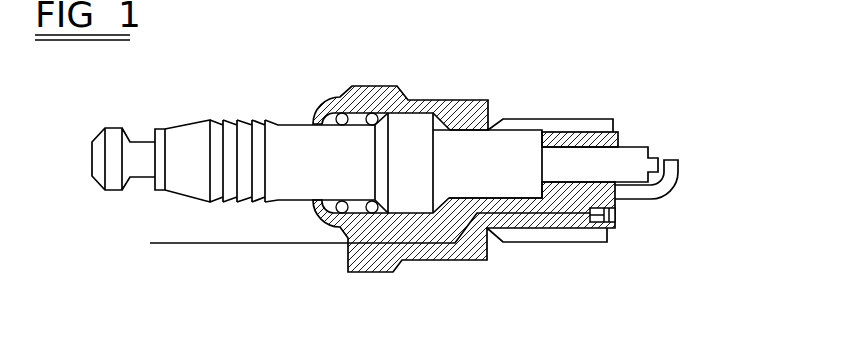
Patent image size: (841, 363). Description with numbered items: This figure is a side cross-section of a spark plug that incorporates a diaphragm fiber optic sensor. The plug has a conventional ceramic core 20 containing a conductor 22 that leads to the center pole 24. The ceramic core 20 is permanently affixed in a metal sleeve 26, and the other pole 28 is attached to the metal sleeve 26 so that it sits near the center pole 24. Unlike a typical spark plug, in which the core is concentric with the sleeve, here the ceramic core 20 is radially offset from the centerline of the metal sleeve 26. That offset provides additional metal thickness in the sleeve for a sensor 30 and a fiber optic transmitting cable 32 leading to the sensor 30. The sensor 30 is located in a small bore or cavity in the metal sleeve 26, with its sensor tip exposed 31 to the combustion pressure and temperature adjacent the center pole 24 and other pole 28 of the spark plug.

The ceramic core 20 is at (297, 124).
The conductor 22 is at (105, 128).
The center pole 24 is at (657, 153).
The metal sleeve 26 is at (482, 101).
The other pole 28 is at (672, 197).
The sensor 30 is at (602, 237).
The sensor tip exposed 31 is at (618, 216).
The fiber optic transmitting cable 32 is at (265, 245).